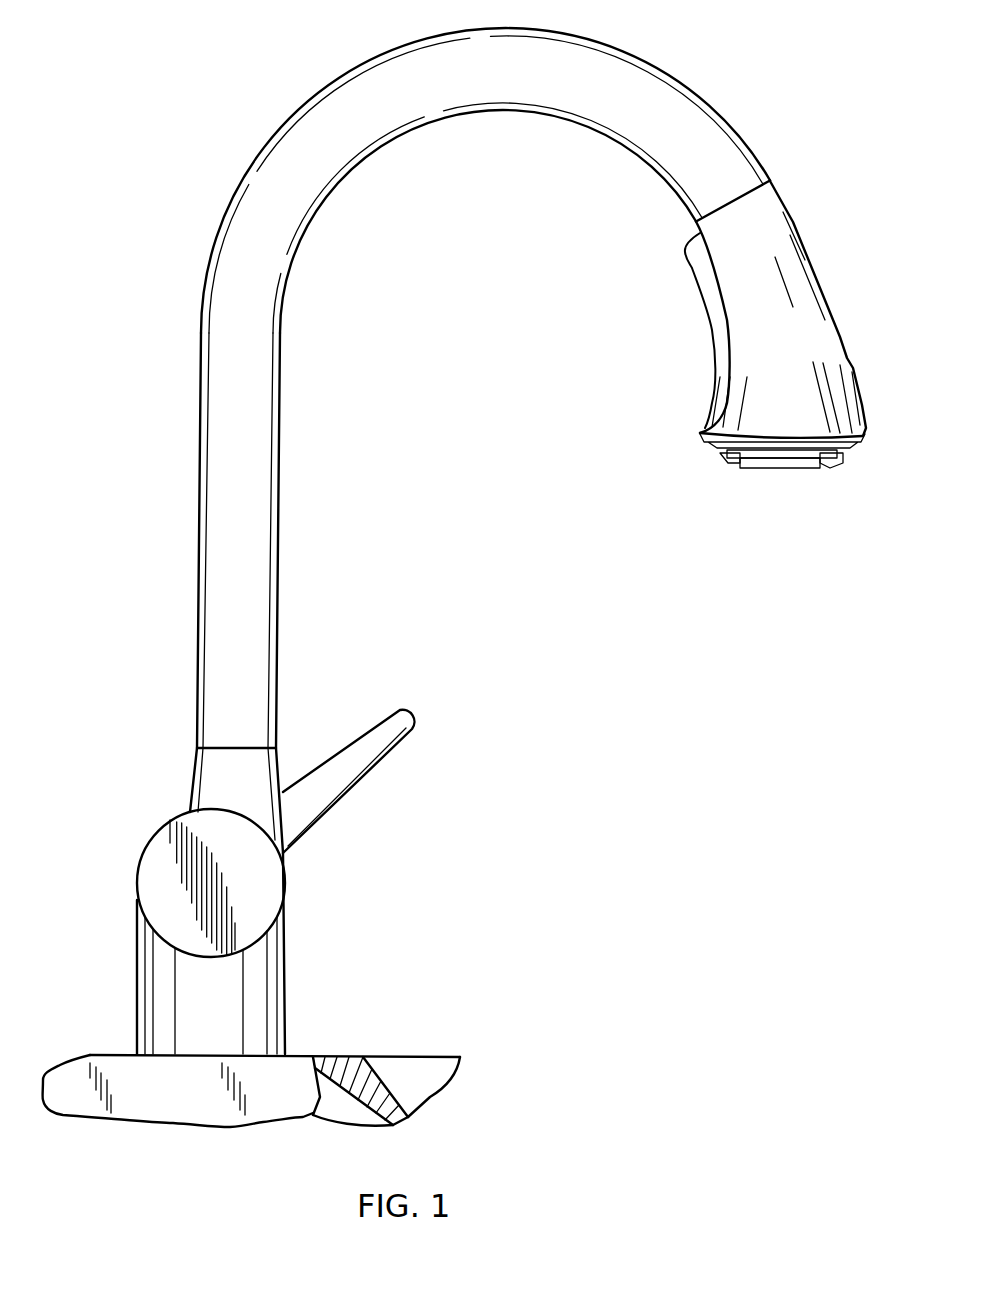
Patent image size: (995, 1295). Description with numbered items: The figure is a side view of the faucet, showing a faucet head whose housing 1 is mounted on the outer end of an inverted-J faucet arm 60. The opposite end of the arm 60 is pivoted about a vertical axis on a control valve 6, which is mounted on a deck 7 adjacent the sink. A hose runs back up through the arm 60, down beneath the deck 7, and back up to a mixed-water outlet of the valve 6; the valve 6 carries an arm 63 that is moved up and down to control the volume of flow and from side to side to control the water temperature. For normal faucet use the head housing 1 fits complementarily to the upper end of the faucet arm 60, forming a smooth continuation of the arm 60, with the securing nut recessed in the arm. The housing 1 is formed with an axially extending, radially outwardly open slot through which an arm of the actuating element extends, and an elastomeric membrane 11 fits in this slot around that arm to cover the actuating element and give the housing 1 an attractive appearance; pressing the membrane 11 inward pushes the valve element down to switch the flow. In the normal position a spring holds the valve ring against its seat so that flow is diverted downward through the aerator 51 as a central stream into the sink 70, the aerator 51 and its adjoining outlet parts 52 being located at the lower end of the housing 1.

The faucet arm 60 is at (550, 43).
The housing 1 is at (812, 258).
The elastomeric membrane 11 is at (705, 280).
The aerator 51 is at (783, 463).
The side outlets 52 is at (733, 458).
The arm 63 is at (420, 713).
The control valve 6 is at (348, 862).
The deck 7 is at (402, 997).
The sink 70 is at (432, 1085).